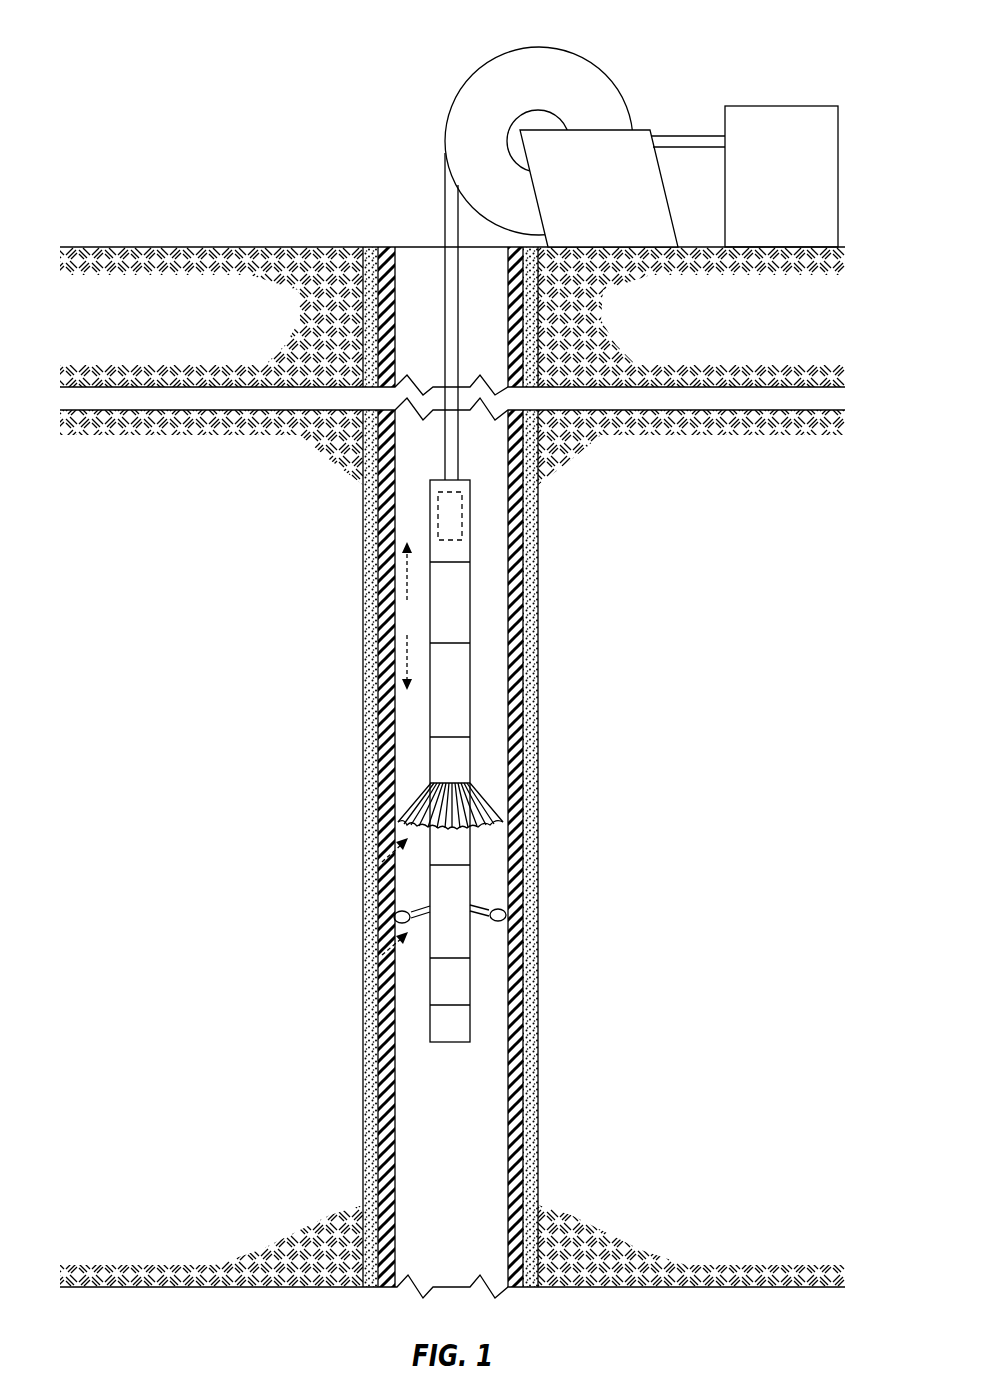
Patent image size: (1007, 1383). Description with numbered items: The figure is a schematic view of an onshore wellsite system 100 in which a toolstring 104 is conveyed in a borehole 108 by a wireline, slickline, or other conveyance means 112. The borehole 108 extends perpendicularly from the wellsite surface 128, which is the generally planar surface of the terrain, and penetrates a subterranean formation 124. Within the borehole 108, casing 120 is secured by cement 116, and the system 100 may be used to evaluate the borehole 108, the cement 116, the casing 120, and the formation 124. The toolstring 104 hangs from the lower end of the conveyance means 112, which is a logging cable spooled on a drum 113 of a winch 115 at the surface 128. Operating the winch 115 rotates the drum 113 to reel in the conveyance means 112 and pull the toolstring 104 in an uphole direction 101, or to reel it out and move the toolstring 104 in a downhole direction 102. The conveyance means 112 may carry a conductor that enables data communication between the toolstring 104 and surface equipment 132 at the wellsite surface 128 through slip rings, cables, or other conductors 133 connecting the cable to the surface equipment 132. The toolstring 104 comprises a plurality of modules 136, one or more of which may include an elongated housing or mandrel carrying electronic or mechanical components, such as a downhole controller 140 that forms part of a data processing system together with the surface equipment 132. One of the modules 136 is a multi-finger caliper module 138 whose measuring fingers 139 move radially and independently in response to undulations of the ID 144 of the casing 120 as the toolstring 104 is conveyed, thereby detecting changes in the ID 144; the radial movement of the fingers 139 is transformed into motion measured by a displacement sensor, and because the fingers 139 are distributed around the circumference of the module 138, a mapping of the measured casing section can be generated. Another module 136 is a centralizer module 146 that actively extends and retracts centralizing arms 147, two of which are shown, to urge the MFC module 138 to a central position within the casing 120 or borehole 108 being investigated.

The wellsite system 100 is at (248, 60).
The uphole direction 101 is at (407, 577).
The downhole direction 102 is at (407, 662).
The toolstring 104 is at (450, 1062).
The borehole 108 is at (410, 264).
The conveyance means 112 is at (459, 340).
The drum 113 is at (473, 73).
The winch 115 is at (672, 207).
The cement 116 is at (400, 822).
The casing 120 is at (402, 765).
The subterranean formation 124 is at (352, 377).
The wellsite surface 128 is at (152, 240).
The surface equipment 132 is at (783, 106).
The slip rings, cables, and/or other conductors 133 is at (685, 134).
The modules 136 is at (470, 550).
The multi-finger caliper (MFC) module 138 is at (470, 757).
The measuring fingers 139 is at (382, 862).
The downhole controller 140 is at (438, 513).
The ID of the casing 144 is at (502, 1182).
The centralizer module 146 is at (470, 890).
The centralizing arms 147 is at (382, 955).